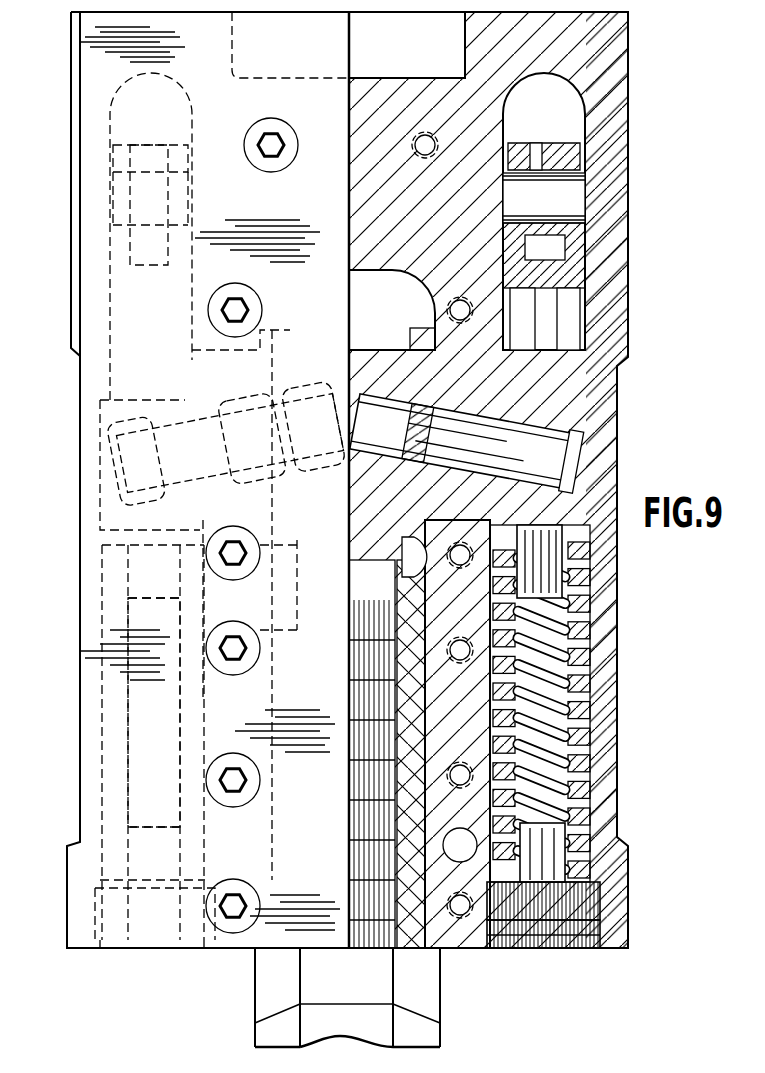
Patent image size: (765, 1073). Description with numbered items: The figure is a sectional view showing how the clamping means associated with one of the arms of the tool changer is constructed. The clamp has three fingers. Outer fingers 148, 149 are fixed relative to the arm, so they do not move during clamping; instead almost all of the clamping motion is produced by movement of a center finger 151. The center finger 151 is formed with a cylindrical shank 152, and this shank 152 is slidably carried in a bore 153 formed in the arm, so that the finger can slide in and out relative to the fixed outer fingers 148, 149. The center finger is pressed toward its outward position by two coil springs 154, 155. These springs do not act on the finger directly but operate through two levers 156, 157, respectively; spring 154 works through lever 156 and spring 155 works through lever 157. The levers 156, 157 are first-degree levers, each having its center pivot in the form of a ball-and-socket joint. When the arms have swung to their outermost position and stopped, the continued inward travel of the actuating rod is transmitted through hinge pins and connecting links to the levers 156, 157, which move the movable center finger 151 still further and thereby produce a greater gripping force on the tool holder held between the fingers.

The outer finger 148 is at (265, 1025).
The outer finger 149 is at (425, 1025).
The center finger 151 is at (337, 1025).
The cylindrical shank 152 is at (383, 835).
The bore 153 is at (385, 775).
The coil spring 154 is at (118, 808).
The coil spring 155 is at (580, 606).
The lever 156 is at (152, 432).
The lever 157 is at (560, 447).